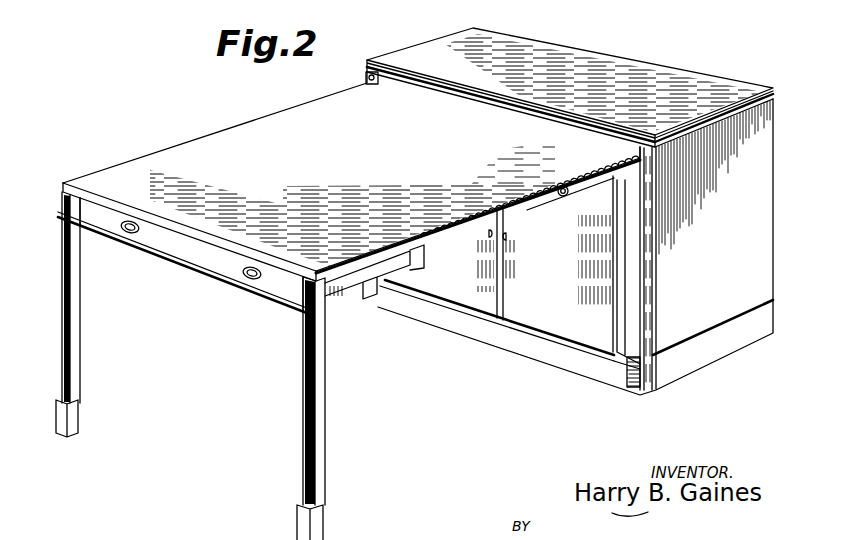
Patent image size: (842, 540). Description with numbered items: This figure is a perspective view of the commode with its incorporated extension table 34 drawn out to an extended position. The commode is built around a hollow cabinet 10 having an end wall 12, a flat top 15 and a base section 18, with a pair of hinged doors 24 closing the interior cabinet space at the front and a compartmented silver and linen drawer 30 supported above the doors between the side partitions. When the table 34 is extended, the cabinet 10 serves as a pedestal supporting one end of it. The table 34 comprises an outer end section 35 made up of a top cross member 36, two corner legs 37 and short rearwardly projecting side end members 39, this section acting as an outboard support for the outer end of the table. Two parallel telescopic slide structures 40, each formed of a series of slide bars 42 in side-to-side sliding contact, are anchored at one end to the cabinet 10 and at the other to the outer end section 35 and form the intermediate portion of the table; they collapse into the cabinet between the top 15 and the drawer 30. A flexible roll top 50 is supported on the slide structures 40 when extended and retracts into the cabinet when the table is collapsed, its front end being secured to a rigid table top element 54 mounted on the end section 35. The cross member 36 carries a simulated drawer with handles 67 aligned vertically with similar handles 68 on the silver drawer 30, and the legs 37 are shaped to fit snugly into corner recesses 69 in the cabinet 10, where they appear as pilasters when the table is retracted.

The cabinet 10 is at (581, 225).
The end wall 12 is at (756, 219).
The flat top 15 is at (668, 72).
The base section 18 is at (671, 375).
The hinged doors 24 is at (521, 318).
The silver and linen drawer 30 is at (604, 200).
The extension table 34 is at (328, 306).
The outer end section 35 is at (209, 285).
The top cross member 36 is at (197, 259).
The corner legs 37 is at (77, 352).
The side end members 39 is at (350, 286).
The telescopic slide structures 40 is at (431, 251).
The slide bars 42 is at (486, 233).
The flexible roll top 50 is at (291, 127).
The rigid table top element 54 is at (82, 172).
The handles 67 is at (140, 236).
The handles 68 is at (563, 196).
The corner recesses 69 is at (637, 381).